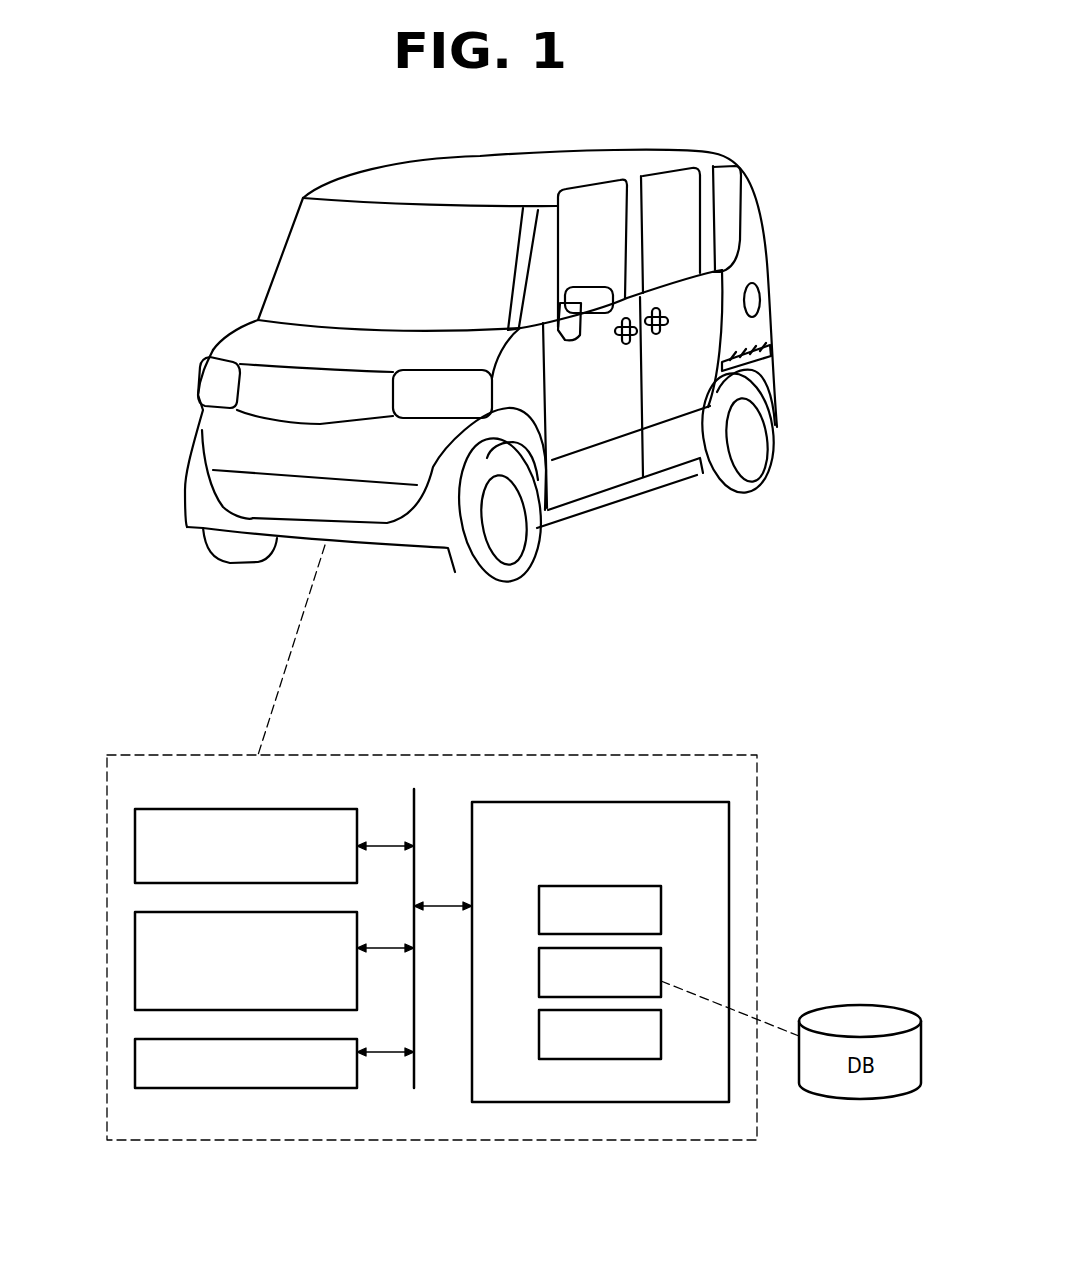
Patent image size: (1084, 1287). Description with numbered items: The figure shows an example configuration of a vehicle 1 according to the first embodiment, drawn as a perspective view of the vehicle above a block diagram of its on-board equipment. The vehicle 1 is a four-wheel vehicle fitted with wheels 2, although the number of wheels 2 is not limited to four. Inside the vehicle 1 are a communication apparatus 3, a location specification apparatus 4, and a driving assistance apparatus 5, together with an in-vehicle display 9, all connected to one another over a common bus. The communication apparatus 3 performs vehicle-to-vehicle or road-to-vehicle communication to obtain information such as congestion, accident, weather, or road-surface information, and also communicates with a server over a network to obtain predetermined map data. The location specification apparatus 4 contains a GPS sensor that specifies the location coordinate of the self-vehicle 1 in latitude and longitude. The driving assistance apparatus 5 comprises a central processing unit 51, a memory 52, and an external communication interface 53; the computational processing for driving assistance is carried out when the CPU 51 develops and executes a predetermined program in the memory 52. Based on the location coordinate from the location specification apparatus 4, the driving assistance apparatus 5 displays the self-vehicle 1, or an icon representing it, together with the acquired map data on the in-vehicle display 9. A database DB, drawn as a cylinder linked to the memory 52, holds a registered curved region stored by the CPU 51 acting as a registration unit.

The vehicle 1 is at (297, 172).
The wheel 2 is at (528, 558).
The communication apparatus 3 is at (135, 837).
The location specification apparatus 4 is at (135, 962).
The driving assistance apparatus 5 is at (686, 802).
The in-vehicle display 9 is at (135, 1065).
The central processing unit (CPU) 51 is at (661, 909).
The memory 52 is at (661, 962).
The external communication interface 53 is at (661, 1034).